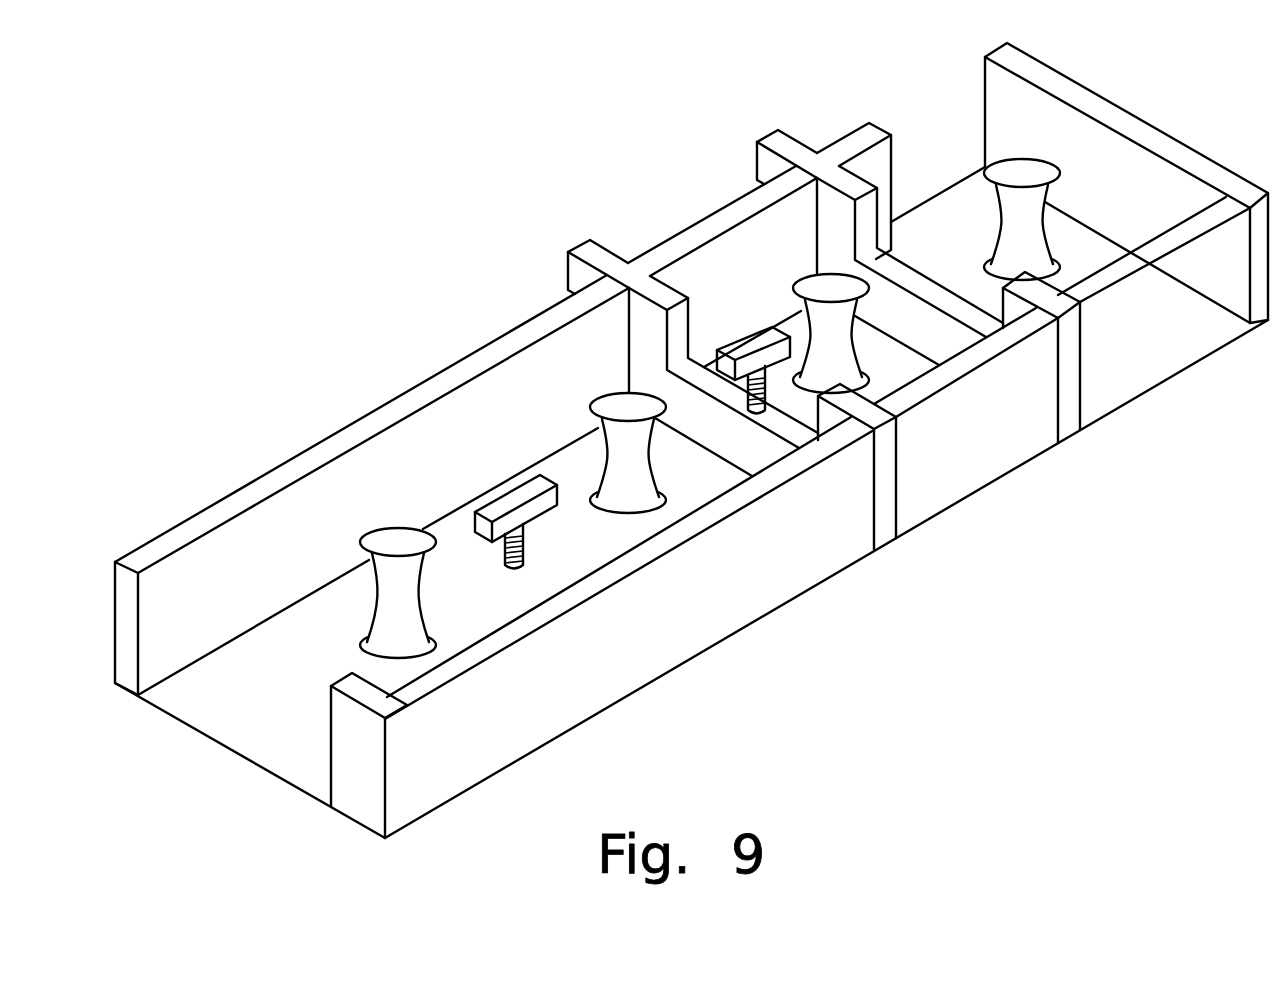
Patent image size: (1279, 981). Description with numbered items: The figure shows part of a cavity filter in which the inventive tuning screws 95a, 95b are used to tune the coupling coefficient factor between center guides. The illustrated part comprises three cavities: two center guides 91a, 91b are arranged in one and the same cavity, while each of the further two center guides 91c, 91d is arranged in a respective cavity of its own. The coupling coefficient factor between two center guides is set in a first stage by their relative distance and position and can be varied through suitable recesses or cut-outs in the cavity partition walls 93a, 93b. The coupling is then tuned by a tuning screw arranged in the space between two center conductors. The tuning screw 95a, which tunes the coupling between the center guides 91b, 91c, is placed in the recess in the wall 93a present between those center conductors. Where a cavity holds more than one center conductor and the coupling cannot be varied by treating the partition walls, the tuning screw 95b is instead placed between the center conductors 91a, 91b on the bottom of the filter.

The center guide 91a is at (385, 505).
The center guide 91b is at (585, 385).
The center guide 91c is at (805, 260).
The center guide 91d is at (1007, 145).
The cavity partition wall 93a is at (733, 442).
The cavity partition wall 93b is at (918, 338).
The tuning screw 95a is at (820, 400).
The tuning screw 95b is at (553, 538).